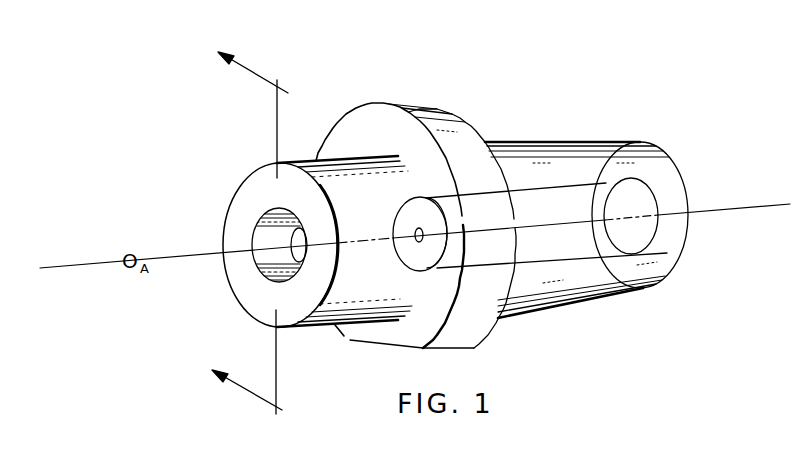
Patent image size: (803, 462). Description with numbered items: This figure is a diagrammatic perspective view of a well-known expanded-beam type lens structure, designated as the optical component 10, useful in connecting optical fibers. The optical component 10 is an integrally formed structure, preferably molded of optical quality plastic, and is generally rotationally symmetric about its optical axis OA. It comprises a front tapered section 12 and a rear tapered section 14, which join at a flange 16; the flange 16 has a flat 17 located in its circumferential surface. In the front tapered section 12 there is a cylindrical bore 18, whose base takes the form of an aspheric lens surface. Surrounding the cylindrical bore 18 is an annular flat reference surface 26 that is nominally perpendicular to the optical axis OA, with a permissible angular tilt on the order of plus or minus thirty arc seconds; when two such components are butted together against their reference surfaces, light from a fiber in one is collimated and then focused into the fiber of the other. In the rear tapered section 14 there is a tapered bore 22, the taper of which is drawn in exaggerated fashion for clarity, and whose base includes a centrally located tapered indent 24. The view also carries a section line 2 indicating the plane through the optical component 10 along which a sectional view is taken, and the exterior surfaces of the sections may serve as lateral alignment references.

The section line 2- 2 is at (244, 226).
The optical component 10 is at (490, 118).
The front tapered section 12 is at (307, 147).
The rear tapered section 14 is at (572, 124).
The flange 16 is at (413, 100).
The flat 17 is at (394, 349).
The cylindrical bore 18 is at (258, 261).
The tapered bore 22 is at (630, 200).
The tapered indent 24 is at (411, 228).
The annular flat reference surface 26 is at (243, 196).